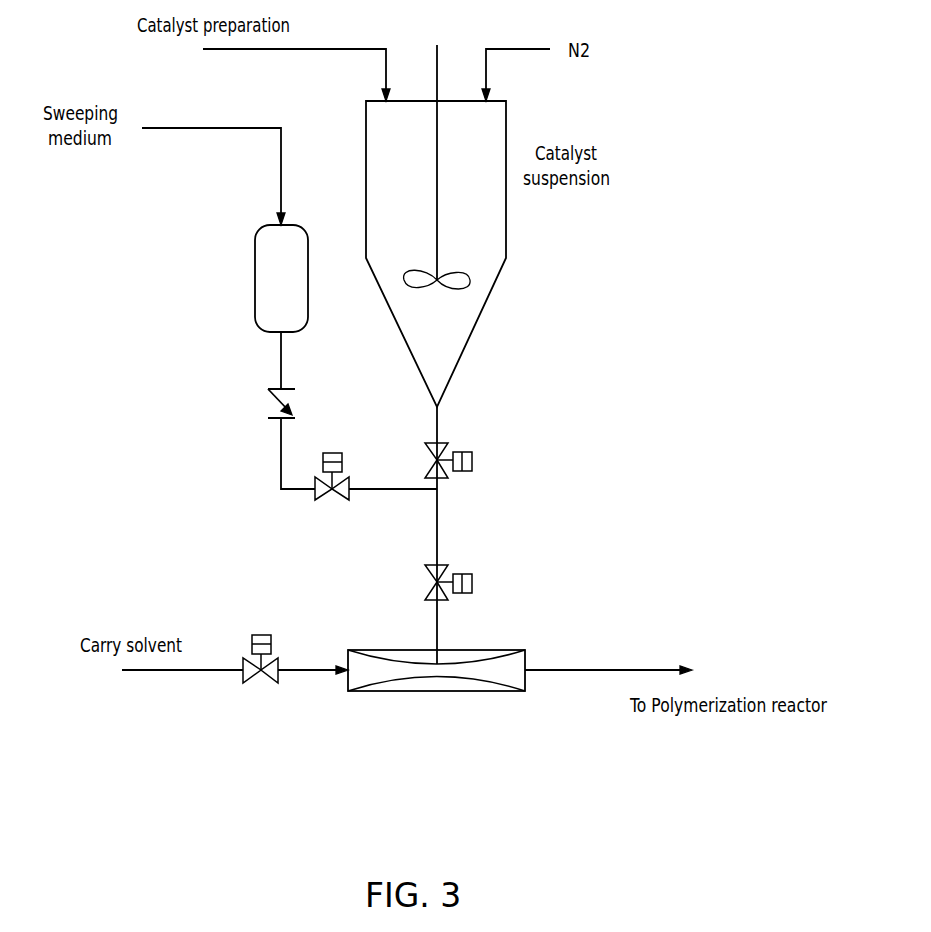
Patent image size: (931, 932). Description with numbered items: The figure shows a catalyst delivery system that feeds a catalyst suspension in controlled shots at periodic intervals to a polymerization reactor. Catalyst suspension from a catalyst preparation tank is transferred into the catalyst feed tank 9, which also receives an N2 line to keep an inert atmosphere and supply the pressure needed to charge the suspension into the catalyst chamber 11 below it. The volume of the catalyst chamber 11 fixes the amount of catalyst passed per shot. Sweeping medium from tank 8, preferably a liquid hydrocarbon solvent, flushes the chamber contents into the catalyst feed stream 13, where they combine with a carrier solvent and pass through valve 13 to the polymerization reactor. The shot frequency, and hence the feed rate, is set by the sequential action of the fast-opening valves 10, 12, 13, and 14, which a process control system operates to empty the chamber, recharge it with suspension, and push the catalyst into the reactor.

The sweeping medium tank 8 is at (277, 282).
The catalyst feed tank 9 is at (480, 315).
The valve 10 is at (459, 452).
The catalyst chamber 11 is at (437, 520).
The valve 12 is at (467, 572).
The valve / catalyst feed stream 13 is at (340, 497).
The valve 14 is at (268, 677).